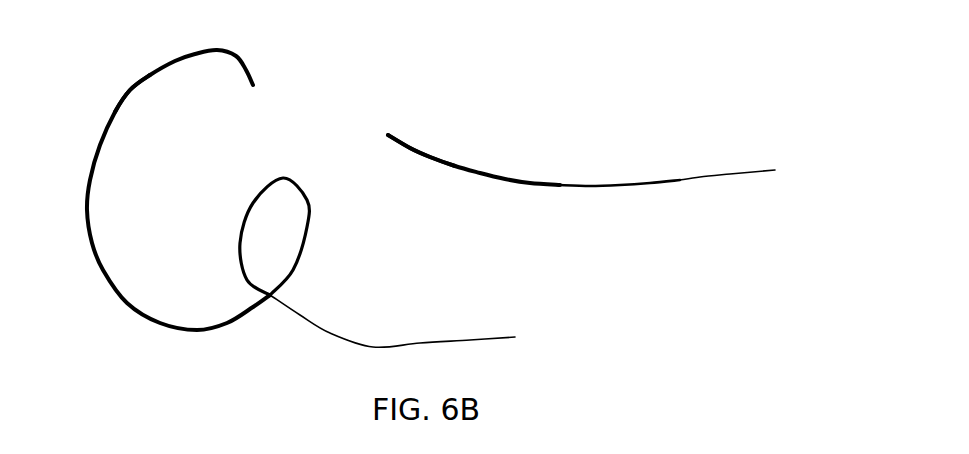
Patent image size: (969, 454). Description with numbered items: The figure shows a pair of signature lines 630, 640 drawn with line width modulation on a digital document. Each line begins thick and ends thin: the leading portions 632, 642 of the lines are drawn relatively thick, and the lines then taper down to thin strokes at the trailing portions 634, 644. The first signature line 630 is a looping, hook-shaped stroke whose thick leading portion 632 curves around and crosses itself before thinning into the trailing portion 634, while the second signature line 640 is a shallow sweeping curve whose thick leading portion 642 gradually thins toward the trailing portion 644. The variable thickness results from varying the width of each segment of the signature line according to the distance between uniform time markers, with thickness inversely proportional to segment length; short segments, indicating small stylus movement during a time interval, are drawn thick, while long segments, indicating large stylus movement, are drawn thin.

The signature line 630 is at (198, 177).
The leading portion 632 is at (122, 87).
The trailing portion 634 is at (443, 338).
The signature line 640 is at (534, 161).
The leading portion 642 is at (425, 147).
The trailing portion 644 is at (740, 170).